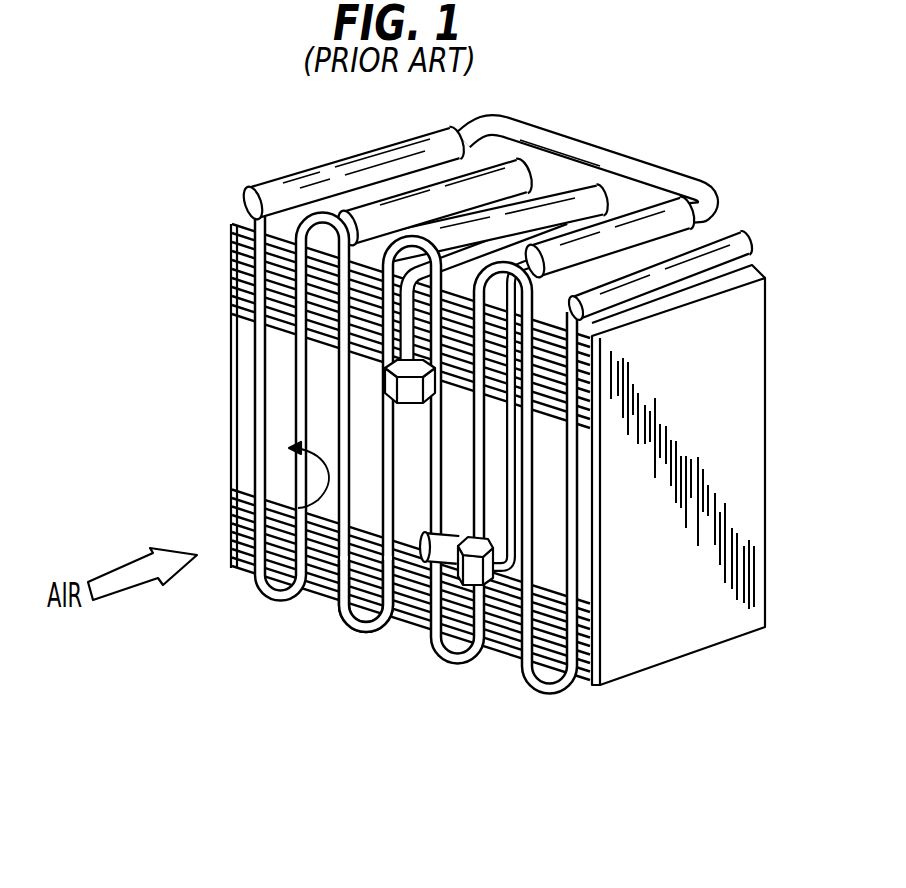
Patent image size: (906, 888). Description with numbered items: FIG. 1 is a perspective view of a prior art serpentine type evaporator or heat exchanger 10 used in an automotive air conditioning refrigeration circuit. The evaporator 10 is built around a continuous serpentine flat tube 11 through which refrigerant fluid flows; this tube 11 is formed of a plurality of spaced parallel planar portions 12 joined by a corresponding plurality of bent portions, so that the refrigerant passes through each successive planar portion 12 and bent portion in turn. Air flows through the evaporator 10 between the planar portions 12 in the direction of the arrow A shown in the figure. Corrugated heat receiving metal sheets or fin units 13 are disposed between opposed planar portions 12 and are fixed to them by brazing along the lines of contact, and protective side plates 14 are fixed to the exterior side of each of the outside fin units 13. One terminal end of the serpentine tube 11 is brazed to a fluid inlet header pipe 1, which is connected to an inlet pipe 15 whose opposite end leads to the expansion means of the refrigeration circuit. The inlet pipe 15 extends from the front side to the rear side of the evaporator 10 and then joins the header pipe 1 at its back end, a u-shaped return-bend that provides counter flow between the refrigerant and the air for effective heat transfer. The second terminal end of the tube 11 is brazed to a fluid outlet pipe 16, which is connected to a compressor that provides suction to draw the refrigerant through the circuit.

The header tube 1 is at (377, 158).
The serpentine type evaporator 10 is at (324, 609).
The serpentine flat tube 11 is at (611, 313).
The planar portions 12 is at (301, 343).
The fin units 13 is at (404, 612).
The protective side plates 14 is at (763, 458).
The inlet pipe 15 is at (584, 142).
The fluid outlet pipe 16 is at (757, 238).
The view direction arrow A is at (303, 468).